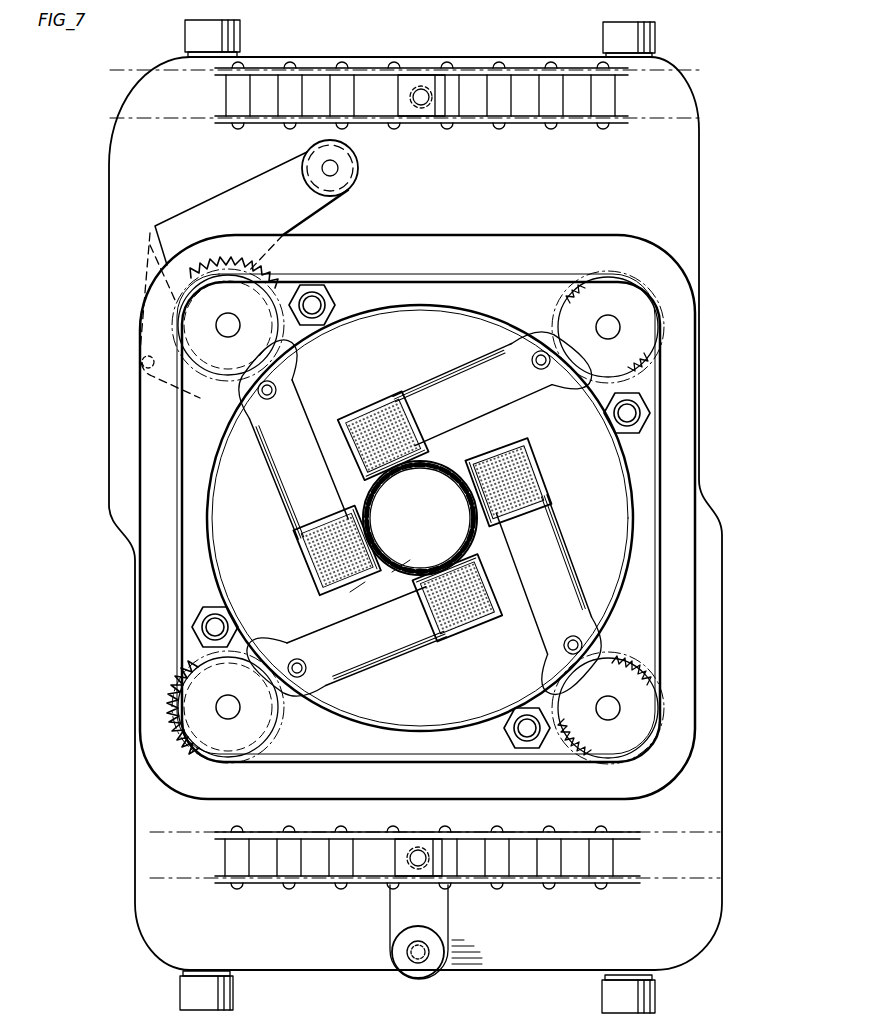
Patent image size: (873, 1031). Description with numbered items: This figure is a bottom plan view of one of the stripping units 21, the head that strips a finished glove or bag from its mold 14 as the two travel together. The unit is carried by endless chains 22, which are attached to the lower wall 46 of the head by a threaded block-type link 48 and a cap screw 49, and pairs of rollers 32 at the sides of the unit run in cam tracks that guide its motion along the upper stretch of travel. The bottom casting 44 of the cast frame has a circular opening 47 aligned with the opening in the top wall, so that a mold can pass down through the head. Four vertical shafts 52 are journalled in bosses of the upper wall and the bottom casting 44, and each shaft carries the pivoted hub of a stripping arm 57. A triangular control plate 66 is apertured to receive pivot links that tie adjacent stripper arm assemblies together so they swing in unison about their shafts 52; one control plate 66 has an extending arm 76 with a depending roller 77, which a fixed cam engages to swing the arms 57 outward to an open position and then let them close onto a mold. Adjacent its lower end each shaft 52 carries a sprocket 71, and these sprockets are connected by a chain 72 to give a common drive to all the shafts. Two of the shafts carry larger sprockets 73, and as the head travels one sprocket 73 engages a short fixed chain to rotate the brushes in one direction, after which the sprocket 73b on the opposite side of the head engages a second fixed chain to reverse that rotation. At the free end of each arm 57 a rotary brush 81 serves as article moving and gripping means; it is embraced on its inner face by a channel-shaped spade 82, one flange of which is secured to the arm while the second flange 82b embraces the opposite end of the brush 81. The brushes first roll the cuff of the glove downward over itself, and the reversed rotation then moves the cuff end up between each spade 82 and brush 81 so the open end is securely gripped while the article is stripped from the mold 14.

The mold 14 is at (448, 478).
The stripping unit 21 is at (702, 220).
The endless chain 22 is at (525, 82).
The roller 32 is at (226, 38).
The bottom casting 44 is at (722, 835).
The lower wall 46 is at (688, 738).
The opening 47 is at (613, 598).
The threaded block-type link 48 is at (445, 90).
The cap screw 49 is at (421, 108).
The vertical shaft 52 is at (236, 320).
The stripping arm 57 is at (462, 380).
The control plate 66 is at (150, 401).
The sprocket 71 is at (300, 280).
The chain 72 is at (660, 620).
The larger sprocket 73 is at (185, 268).
The roller 73b is at (168, 712).
The extending arm 76 is at (226, 203).
The depending roller 77 is at (352, 178).
The rotary brush 81 is at (385, 410).
The spade 82 is at (392, 572).
The second flange 82b is at (350, 592).